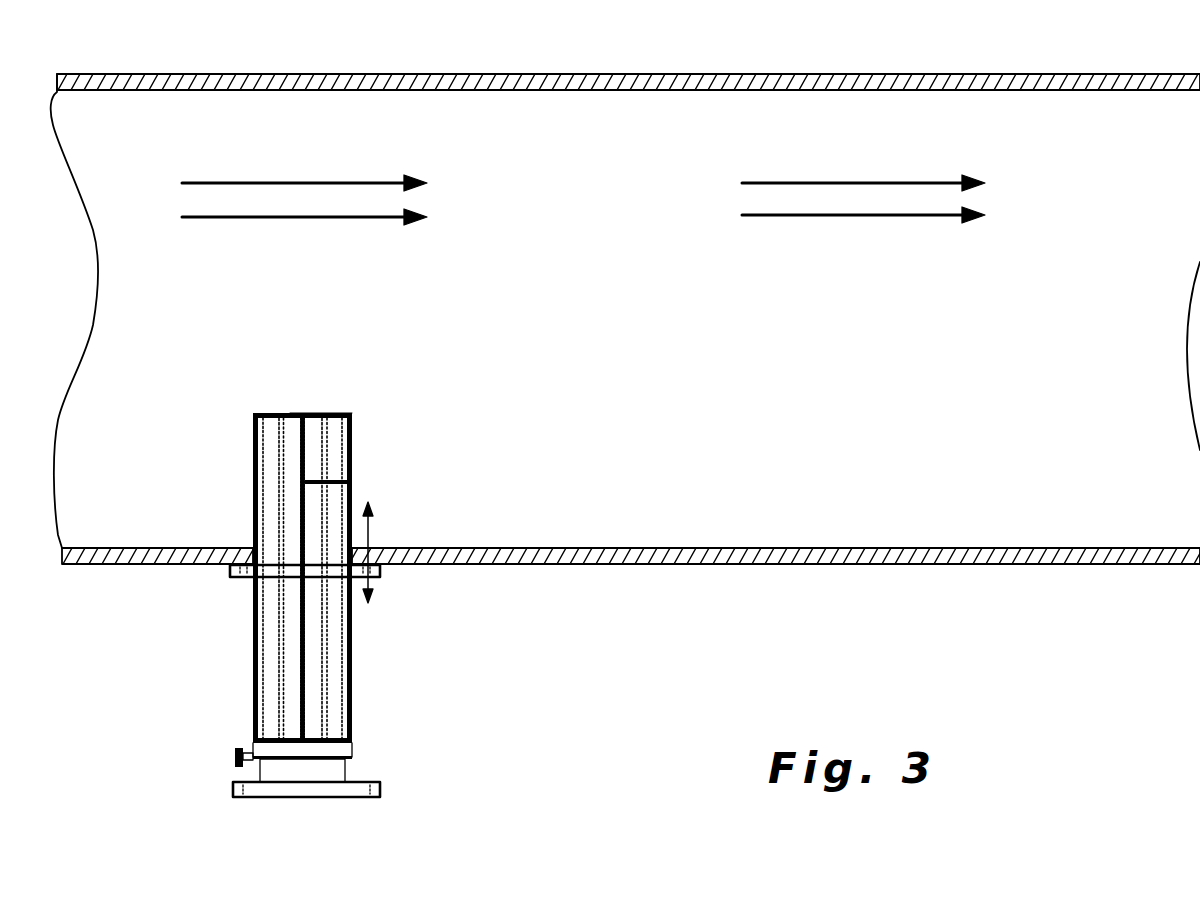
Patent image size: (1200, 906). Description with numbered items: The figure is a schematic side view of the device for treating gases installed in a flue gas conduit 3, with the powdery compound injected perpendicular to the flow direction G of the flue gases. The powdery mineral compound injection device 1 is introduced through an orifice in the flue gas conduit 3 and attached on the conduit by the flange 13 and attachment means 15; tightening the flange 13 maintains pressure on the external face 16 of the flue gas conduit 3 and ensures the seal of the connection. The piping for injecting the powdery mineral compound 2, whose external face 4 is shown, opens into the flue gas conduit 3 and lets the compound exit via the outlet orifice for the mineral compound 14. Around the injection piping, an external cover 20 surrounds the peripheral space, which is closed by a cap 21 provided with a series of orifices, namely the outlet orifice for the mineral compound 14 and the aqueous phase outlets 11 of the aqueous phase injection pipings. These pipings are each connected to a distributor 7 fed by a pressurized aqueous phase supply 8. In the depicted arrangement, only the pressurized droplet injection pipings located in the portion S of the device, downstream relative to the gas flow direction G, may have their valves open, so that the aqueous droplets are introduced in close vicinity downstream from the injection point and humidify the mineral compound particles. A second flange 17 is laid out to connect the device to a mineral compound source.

The powdery mineral compound injection device 1 is at (362, 661).
The piping for injecting the powdery mineral compound 2 is at (330, 769).
The flue gas conduit 3 is at (703, 78).
The external face 4 is at (302, 772).
The distributor 7 is at (335, 750).
The aqueous phase supply 8 is at (232, 756).
The aqueous phase outlet 11 is at (333, 354).
The flange 13 is at (240, 580).
The outlet orifice for the mineral compound 14 is at (301, 400).
The attachment means 15 is at (375, 578).
The external face of the flue gas conduit 16 is at (458, 563).
The second flange 17 is at (382, 788).
The external cover 20 is at (352, 534).
The cap for closing the peripheral space 21 is at (340, 412).
The portion of the flue gas treatment device S is at (332, 478).
The flow direction of the flue gases G is at (583, 200).